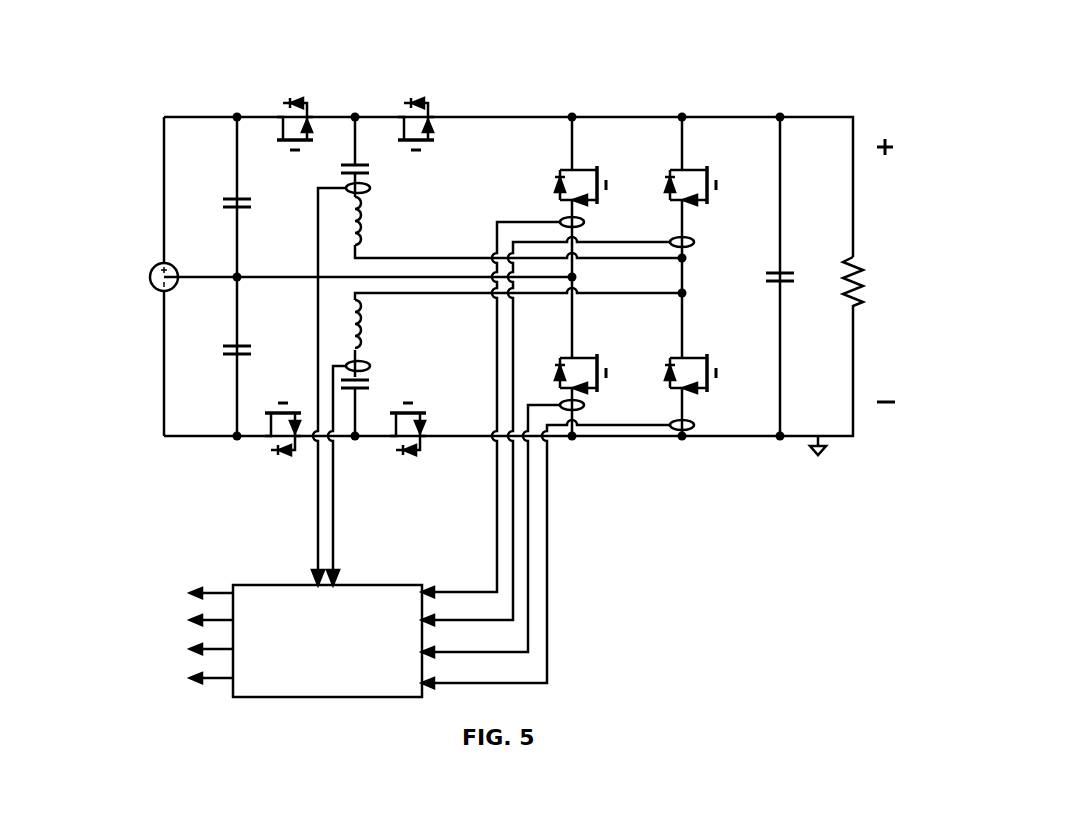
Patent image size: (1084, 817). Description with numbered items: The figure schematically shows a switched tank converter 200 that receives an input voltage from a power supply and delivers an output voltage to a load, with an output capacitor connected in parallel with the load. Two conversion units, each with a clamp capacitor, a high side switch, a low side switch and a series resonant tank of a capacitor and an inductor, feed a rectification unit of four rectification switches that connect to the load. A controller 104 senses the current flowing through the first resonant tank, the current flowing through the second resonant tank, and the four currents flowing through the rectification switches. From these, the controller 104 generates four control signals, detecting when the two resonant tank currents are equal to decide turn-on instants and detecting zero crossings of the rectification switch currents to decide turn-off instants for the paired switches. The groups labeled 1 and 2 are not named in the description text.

The switched tank converter 200 is at (877, 58).
The controller 104 is at (327, 641).
The phase A switching leg (SHA1, SLA1, CA1, LA1) 1 is at (479, 178).
The phase B switching leg (SHB1, SLB1, CB1, LB1) 2 is at (473, 371).